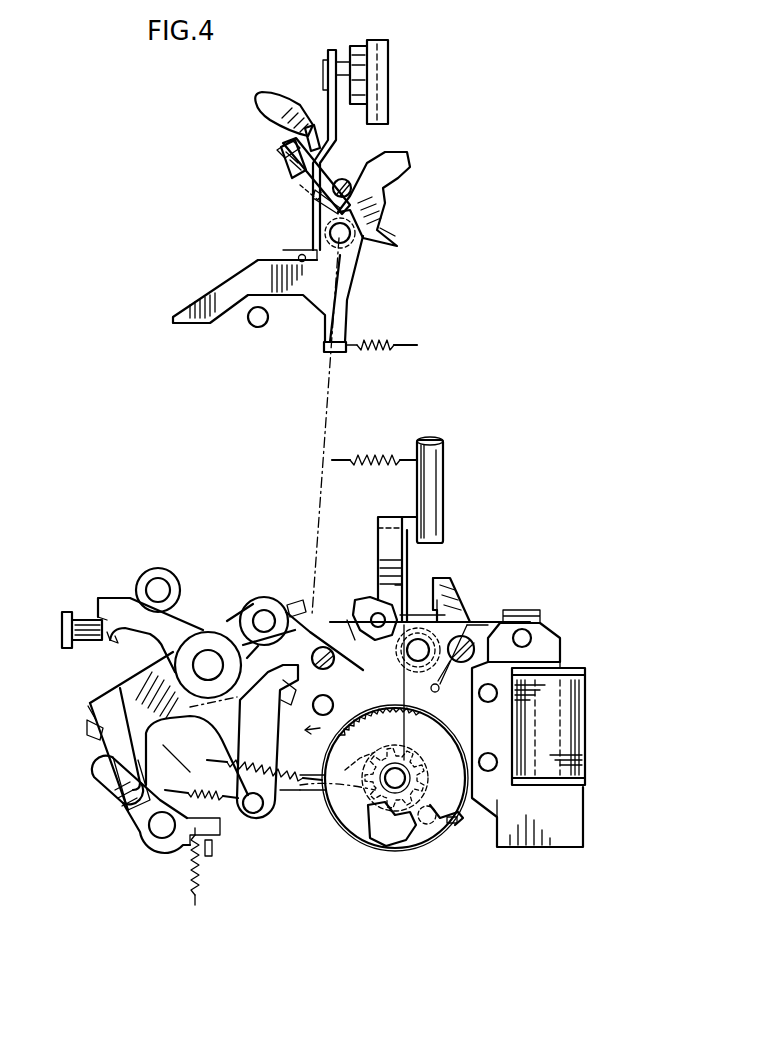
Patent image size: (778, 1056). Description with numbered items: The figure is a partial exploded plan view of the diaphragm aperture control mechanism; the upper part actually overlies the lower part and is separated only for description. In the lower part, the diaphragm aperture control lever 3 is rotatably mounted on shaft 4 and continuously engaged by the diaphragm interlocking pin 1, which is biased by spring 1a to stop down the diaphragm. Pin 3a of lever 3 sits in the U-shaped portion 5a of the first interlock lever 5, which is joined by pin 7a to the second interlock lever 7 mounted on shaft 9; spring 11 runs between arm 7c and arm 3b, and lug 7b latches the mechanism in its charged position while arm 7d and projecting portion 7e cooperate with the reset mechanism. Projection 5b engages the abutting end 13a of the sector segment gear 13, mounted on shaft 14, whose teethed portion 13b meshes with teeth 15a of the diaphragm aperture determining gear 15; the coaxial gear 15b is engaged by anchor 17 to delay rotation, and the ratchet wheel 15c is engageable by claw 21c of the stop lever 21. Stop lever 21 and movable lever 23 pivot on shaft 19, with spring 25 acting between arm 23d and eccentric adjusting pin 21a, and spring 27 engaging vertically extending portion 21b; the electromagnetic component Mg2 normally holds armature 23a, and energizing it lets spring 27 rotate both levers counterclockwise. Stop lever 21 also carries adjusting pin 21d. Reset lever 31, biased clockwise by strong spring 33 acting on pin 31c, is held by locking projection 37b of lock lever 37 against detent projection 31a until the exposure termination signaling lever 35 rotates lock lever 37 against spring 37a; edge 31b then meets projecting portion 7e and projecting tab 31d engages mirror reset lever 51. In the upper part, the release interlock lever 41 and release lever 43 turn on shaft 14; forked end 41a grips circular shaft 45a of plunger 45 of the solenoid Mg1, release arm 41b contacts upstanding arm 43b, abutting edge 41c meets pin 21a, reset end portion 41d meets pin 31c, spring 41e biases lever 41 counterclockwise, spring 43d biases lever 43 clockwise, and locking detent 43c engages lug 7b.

The diaphragm interlocking pin 1 is at (435, 455).
The spring 1a is at (382, 452).
The diaphragm aperture control lever 3 is at (405, 517).
The pin 3a is at (398, 590).
The arm 3b is at (333, 790).
The shaft 4 is at (383, 703).
The first interlock lever 5 is at (355, 605).
The hooked or U-shaped portion 5a is at (372, 612).
The projection 5b is at (350, 612).
The second interlock lever 7 is at (240, 625).
The pin 7a is at (265, 610).
The lug 7b is at (287, 132).
The arm 7c is at (163, 742).
The arm 7d is at (105, 596).
The projecting portion 7e is at (110, 640).
The shaft 9 is at (210, 655).
The spring 11 is at (268, 768).
The sector segment gear 13 is at (312, 772).
The abutting end 13a is at (288, 686).
The teethed portion 13b is at (292, 792).
The shaft 14 is at (342, 236).
The diaphragm aperture determining gear 15 is at (408, 837).
The teeth 15a is at (395, 790).
The gear 15b is at (377, 812).
The diaphragm stop gear or ratchet wheel 15c is at (430, 805).
The anchor 17 is at (447, 820).
The shaft 19 is at (417, 638).
The stop lever 21 is at (393, 187).
The eccentric adjusting pin 21a is at (480, 622).
The vertically extending portion 21b is at (440, 578).
The claw 21c is at (380, 230).
The adjusting pin 21d is at (342, 180).
The movable lever 23 is at (520, 622).
The armature 23a is at (545, 635).
The arm 23d is at (437, 692).
The spring 25 is at (465, 637).
The spring 27 is at (445, 605).
The reset lever 31 is at (130, 715).
The detent projection 31a is at (118, 778).
The edge 31b is at (100, 705).
The pin 31c is at (257, 322).
The projecting tab 31d is at (87, 730).
The spring 33 is at (222, 822).
The exposure termination signaling lever 35 is at (209, 858).
The lock lever 37 is at (128, 818).
The spring 37a is at (190, 868).
The locking projection 37b is at (95, 762).
The release interlock lever 41 is at (248, 287).
The U-shaped or forked end 41a is at (330, 103).
The release arm 41b is at (280, 157).
The abutting edge 41c is at (313, 200).
The reset end portion 41d is at (187, 322).
The spring 41e is at (382, 343).
The release lever 43 is at (263, 98).
The upstanding arm 43b is at (290, 181).
The locking detent 43c is at (307, 99).
The spring 43d is at (317, 220).
The plunger 45 is at (326, 62).
The circular shaft 45a is at (342, 67).
The mirror reset lever 51 is at (65, 632).
The electromagnetic diaphragm release component Mg1 is at (374, 33).
The electromagnetic component Mg2 is at (592, 764).